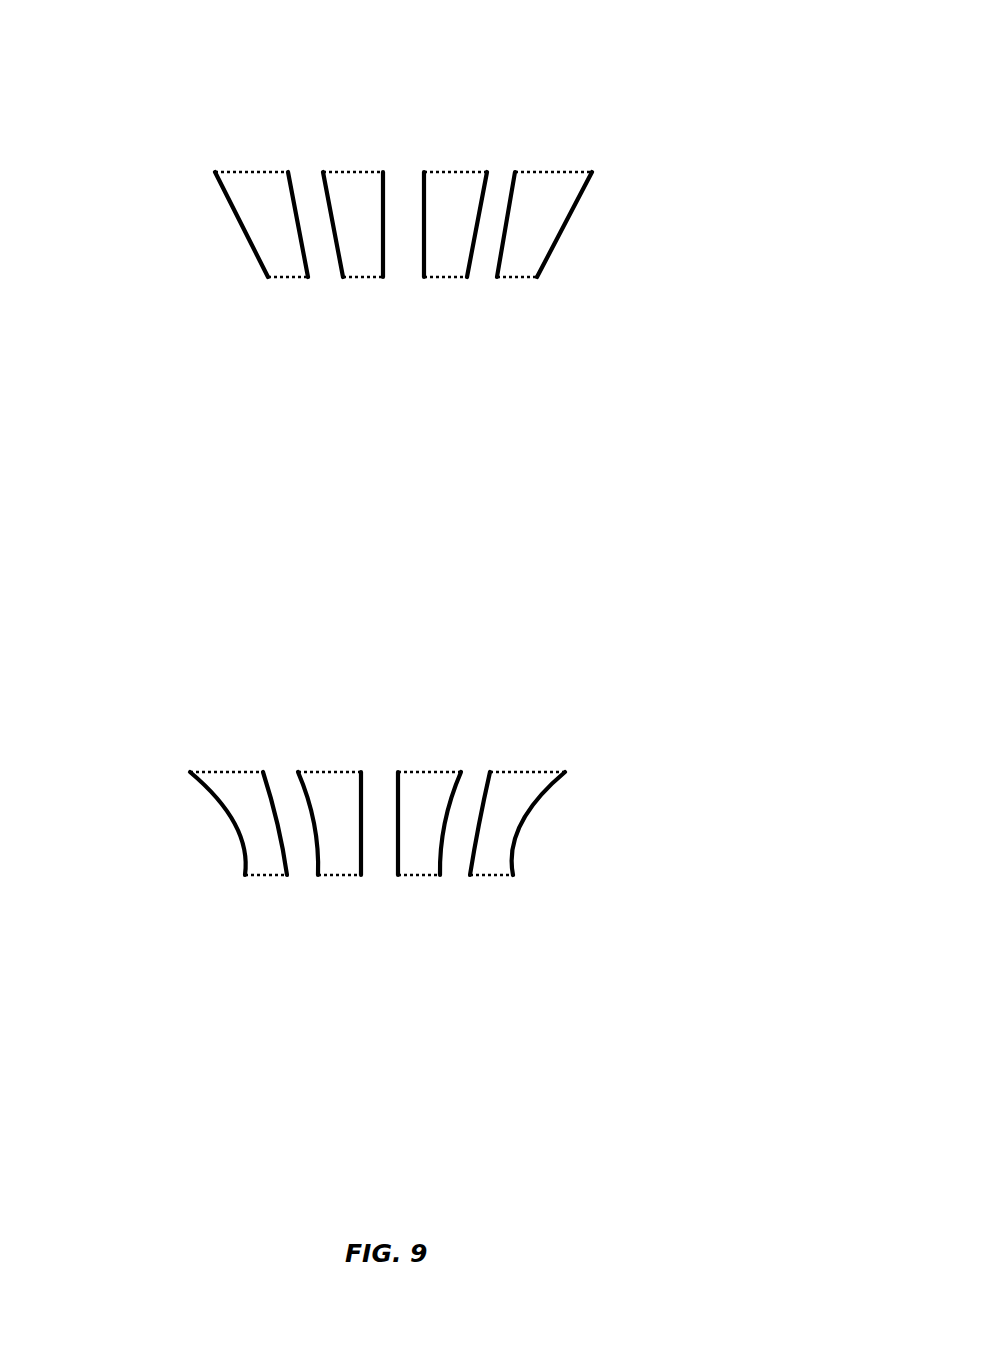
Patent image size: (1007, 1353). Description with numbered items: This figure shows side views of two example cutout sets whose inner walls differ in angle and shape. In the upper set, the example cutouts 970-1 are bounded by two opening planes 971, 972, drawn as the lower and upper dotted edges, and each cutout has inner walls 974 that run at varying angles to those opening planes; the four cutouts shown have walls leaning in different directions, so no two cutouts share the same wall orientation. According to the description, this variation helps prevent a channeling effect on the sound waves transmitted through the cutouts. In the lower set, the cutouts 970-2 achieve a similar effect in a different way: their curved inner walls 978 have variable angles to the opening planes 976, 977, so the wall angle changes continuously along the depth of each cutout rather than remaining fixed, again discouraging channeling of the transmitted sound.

The example cutouts 970-1 is at (698, 85).
The opening plane 971 is at (372, 298).
The opening plane 972 is at (263, 168).
The inner walls 974 is at (300, 235).
The cutouts 970-2 is at (673, 684).
The opening plane 976 is at (348, 897).
The opening plane 977 is at (240, 765).
The curved inner walls 978 is at (277, 837).